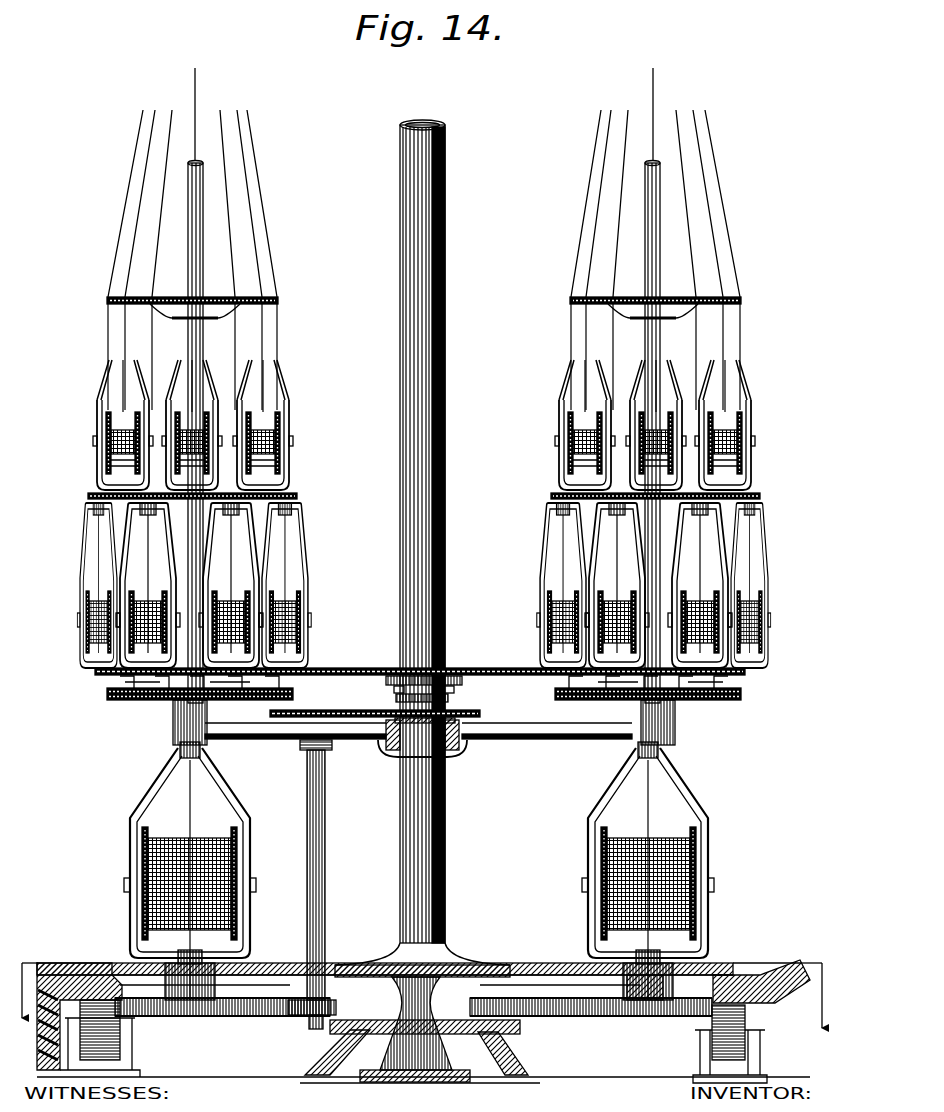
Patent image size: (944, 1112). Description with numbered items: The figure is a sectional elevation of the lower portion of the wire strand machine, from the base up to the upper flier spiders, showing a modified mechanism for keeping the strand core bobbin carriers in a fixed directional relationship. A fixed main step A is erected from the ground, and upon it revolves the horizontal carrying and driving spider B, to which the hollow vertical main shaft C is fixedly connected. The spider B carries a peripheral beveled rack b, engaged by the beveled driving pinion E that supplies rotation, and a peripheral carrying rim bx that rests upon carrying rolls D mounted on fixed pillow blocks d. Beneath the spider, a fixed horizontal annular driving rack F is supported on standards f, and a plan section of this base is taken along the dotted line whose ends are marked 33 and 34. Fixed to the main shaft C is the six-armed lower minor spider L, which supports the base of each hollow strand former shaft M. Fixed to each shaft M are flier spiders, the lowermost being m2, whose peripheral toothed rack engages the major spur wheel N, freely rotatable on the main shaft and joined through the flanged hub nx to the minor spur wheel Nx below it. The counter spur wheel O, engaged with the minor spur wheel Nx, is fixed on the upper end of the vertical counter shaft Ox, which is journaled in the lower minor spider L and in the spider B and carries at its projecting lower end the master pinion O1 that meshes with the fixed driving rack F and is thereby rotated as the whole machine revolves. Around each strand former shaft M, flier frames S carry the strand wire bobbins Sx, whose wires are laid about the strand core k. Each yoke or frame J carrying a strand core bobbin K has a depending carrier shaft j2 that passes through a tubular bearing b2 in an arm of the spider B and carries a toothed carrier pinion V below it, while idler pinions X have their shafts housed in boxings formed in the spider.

The main shaft C is at (416, 601).
The strand former shaft M is at (203, 240).
The strand core k is at (253, 205).
The flier frames S is at (93, 403).
The strand wire bobbins Sx is at (268, 447).
The major spur wheel N is at (420, 659).
The lowermost flier spider m2 is at (762, 680).
The flanged hub nx is at (449, 700).
The counter spur wheel O is at (270, 713).
The minor spur wheel Nx is at (454, 713).
The lower minor spider L is at (540, 740).
The counter shaft Ox is at (328, 870).
The master pinion O1 is at (296, 1020).
The yoke or frame J is at (150, 776).
The strand core bobbins K is at (419, 880).
The carrying and driving spider B is at (115, 963).
The beveled driving pinion E is at (55, 963).
The dotted line end 33 is at (23, 982).
The dotted line end 34 is at (811, 987).
The tubular bearings b2 is at (598, 1015).
The carrier pinion V is at (215, 1012).
The driving rack F is at (505, 1030).
The idler pinions X is at (556, 1041).
The standards f is at (336, 1030).
The carrier shaft j2 is at (645, 1016).
The carrying rim bx is at (746, 983).
The beveled rack b is at (784, 998).
The carrying rolls D is at (718, 1030).
The pillow blocks d is at (741, 1056).
The main step A is at (392, 1072).
The column base Cx is at (402, 1100).